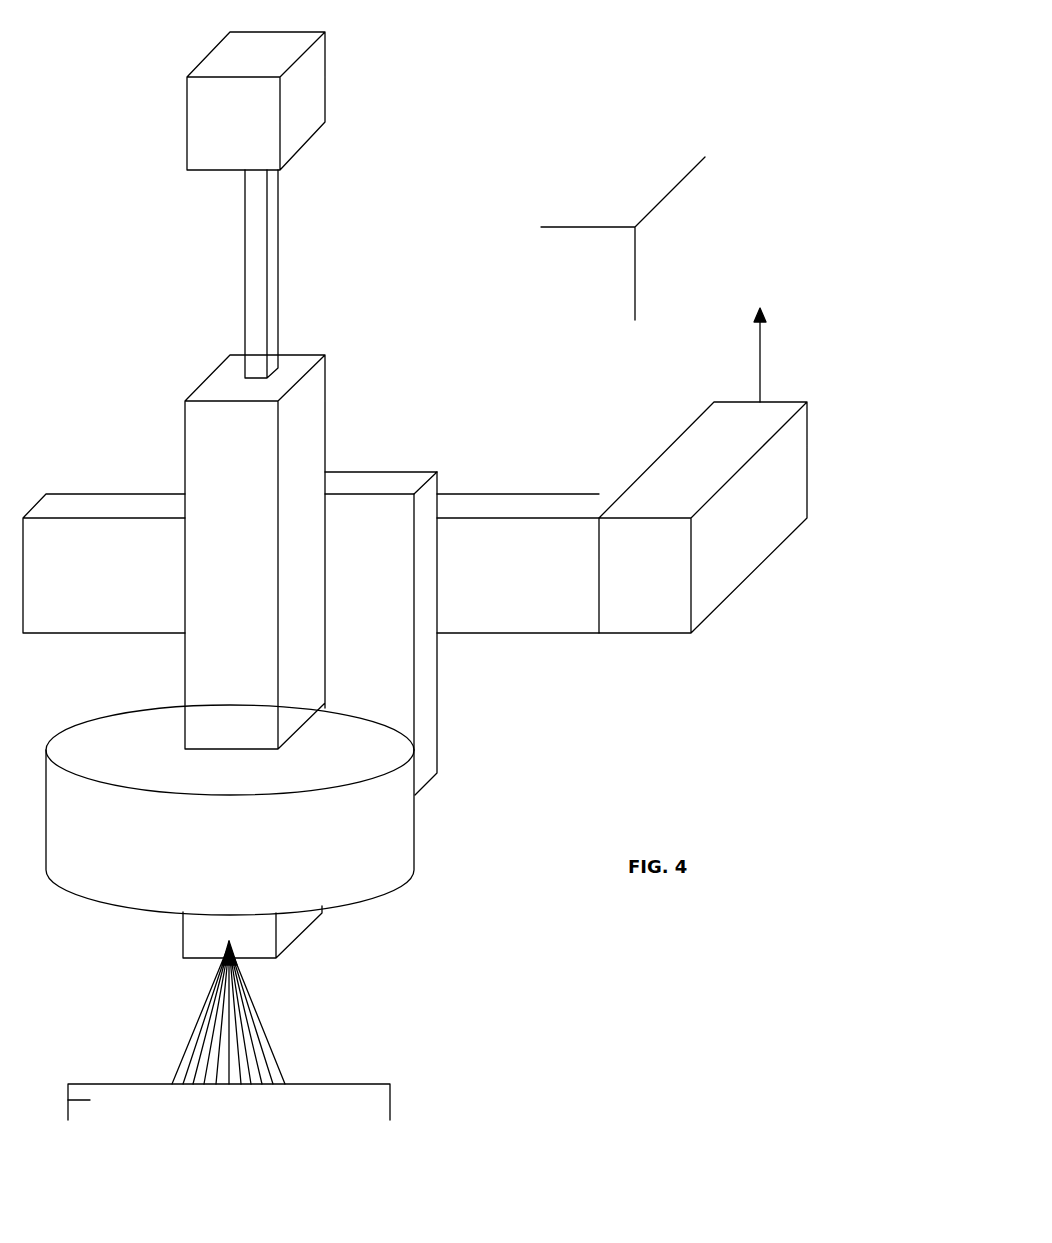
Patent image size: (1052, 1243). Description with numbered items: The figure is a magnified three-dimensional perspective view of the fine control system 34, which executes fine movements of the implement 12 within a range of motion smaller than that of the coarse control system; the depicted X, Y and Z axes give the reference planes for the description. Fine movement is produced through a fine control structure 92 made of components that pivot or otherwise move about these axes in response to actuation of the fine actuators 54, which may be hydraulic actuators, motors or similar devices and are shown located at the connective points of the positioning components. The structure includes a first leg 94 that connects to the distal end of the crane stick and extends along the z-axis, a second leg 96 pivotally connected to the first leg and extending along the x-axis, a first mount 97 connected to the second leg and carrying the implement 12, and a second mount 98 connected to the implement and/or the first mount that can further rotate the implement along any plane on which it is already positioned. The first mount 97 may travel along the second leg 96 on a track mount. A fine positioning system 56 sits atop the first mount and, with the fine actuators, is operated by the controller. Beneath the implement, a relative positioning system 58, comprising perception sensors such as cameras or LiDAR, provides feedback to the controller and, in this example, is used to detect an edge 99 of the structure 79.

The implement 12 is at (299, 578).
The fine control system 34 is at (582, 100).
The fine actuators 54 is at (807, 470).
The fine positioning system 56 is at (245, 50).
The relative positioning system 58 is at (234, 956).
The structure 79 is at (90, 1110).
The fine control structure 92 is at (439, 486).
The first leg 94 is at (755, 540).
The second leg 96 is at (554, 494).
The first mount 97 is at (371, 494).
The second mount 98 is at (390, 833).
The edge 99 is at (366, 1084).